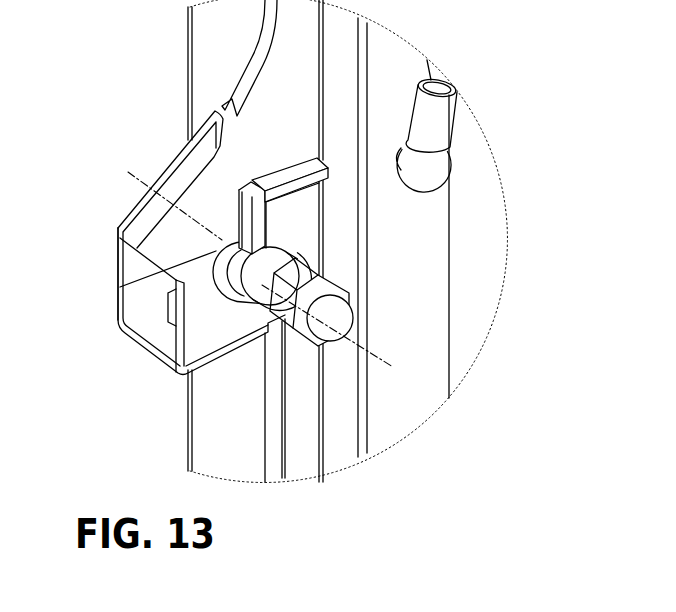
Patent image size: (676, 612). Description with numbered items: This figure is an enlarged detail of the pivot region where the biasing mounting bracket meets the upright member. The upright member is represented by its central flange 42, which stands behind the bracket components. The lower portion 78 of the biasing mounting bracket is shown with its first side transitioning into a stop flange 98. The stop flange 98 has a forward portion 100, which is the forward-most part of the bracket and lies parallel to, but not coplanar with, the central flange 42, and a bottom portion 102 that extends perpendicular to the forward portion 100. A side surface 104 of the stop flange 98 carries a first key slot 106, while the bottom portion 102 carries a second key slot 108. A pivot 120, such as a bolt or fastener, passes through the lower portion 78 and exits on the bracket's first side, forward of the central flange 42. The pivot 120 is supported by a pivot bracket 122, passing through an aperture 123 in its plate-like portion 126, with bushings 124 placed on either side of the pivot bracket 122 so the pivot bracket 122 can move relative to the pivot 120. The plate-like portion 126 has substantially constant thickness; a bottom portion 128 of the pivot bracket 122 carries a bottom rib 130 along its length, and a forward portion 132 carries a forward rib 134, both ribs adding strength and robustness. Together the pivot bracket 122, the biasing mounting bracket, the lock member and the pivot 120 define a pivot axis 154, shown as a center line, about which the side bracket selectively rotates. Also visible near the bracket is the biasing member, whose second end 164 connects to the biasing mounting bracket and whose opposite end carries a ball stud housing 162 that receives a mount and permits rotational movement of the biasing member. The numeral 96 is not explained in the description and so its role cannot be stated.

The central flange 42 is at (205, 64).
The lower portion 78 is at (165, 385).
The side wall 96 is at (111, 273).
The stop flange 98 is at (138, 303).
The forward portion 100 is at (118, 259).
The bottom portion 102 is at (214, 366).
The side surface 104 is at (173, 355).
The first key slot 106 is at (150, 322).
The second key slot 108 is at (287, 339).
The pivot 120 is at (338, 264).
The pivot bracket 122 is at (312, 206).
The aperture 123 is at (268, 243).
The bushings 124 is at (214, 238).
The plate-like portion 126 is at (285, 212).
The bottom portion 128 is at (241, 184).
The bottom rib 130 is at (140, 288).
The forward portion 132 is at (330, 192).
The forward rib 134 is at (315, 163).
The pivot axis 154 is at (385, 364).
The ball stud housing 162 is at (445, 163).
The second end 164 is at (458, 126).